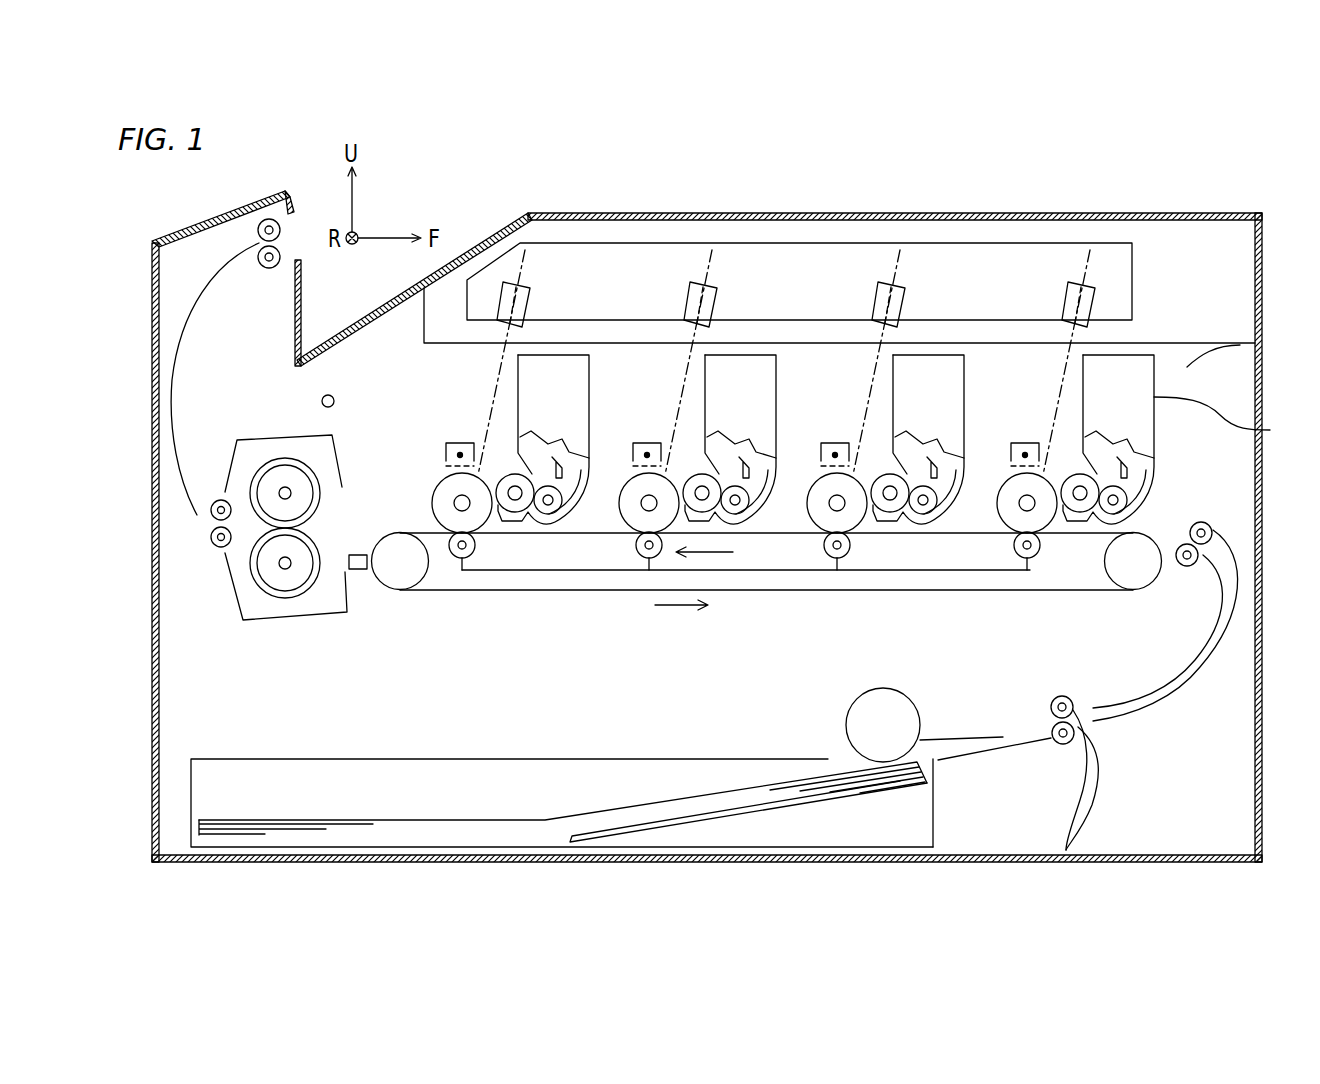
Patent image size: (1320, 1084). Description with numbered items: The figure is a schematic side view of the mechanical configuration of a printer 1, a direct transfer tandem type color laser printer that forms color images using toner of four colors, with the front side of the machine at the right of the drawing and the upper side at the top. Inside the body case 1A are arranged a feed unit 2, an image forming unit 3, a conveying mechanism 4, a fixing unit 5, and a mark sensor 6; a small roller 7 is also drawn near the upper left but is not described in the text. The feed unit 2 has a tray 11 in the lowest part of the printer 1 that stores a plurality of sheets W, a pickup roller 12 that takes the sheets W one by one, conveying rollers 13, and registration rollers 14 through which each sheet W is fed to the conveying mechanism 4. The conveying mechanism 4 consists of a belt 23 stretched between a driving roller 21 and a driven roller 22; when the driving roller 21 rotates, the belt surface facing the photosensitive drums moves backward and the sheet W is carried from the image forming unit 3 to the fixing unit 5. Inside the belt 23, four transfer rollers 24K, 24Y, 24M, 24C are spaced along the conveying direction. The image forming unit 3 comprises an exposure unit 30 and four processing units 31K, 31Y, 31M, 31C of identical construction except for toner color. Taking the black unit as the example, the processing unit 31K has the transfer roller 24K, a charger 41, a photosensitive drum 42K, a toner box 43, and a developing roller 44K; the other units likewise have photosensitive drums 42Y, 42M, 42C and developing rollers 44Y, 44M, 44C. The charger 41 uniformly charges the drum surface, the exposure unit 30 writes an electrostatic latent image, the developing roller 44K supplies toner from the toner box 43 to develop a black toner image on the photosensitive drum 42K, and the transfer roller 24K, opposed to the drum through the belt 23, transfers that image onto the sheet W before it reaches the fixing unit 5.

The printer 1 is at (762, 205).
The body case 1A is at (199, 222).
The feed unit 2 is at (576, 794).
The image forming unit 3 is at (1190, 358).
The conveying mechanism 4 is at (757, 614).
The fixing unit 5 is at (237, 463).
The mark sensor 6 is at (356, 553).
The roller 7 is at (334, 400).
The tray 11 is at (933, 795).
The pickup roller 12 is at (887, 735).
The conveying rollers 13 is at (1066, 850).
The registration rollers 14 is at (1212, 527).
The driving roller 21 is at (387, 572).
The driven roller 22 is at (1137, 573).
The belt 23 is at (585, 595).
The transfer roller 24C is at (457, 557).
The transfer roller 24M is at (647, 558).
The transfer roller 24Y is at (840, 557).
The transfer roller 24K is at (1032, 550).
The exposure unit 30 is at (1133, 257).
The processing unit 31C is at (549, 342).
The processing unit 31M is at (738, 342).
The processing unit 31Y is at (926, 342).
The processing unit 31K is at (1138, 342).
The charger 41 is at (1023, 440).
The photosensitive drum 42C is at (440, 518).
The photosensitive drum 42M is at (637, 515).
The photosensitive drum 42Y is at (823, 520).
The photosensitive drum 42K is at (1010, 520).
The toner box 43 is at (1225, 421).
The developing roller 44C is at (515, 508).
The developing roller 44M is at (705, 512).
The developing roller 44Y is at (890, 512).
The developing roller 44K is at (1080, 503).
The sheet W is at (552, 828).